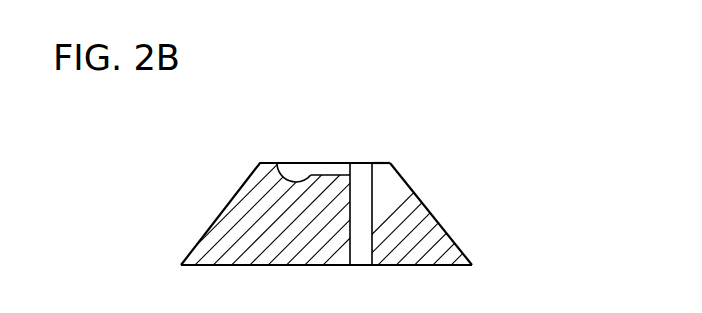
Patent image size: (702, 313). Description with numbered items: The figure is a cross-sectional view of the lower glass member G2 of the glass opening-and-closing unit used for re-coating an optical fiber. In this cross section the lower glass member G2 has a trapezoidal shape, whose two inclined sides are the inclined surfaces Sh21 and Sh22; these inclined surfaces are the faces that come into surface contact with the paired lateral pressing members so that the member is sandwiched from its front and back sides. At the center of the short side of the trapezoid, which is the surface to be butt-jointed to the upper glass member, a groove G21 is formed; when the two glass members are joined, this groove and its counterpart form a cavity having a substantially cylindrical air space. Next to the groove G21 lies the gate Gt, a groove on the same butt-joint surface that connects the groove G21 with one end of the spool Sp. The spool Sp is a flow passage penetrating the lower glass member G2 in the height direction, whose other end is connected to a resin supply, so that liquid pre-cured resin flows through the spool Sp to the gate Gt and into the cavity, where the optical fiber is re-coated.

The inclined surface Sh21 is at (226, 207).
The inclined surface Sh22 is at (442, 227).
The lower glass member G2 is at (408, 182).
The groove G21 is at (288, 162).
The gate Gt is at (325, 163).
The spool Sp is at (372, 183).